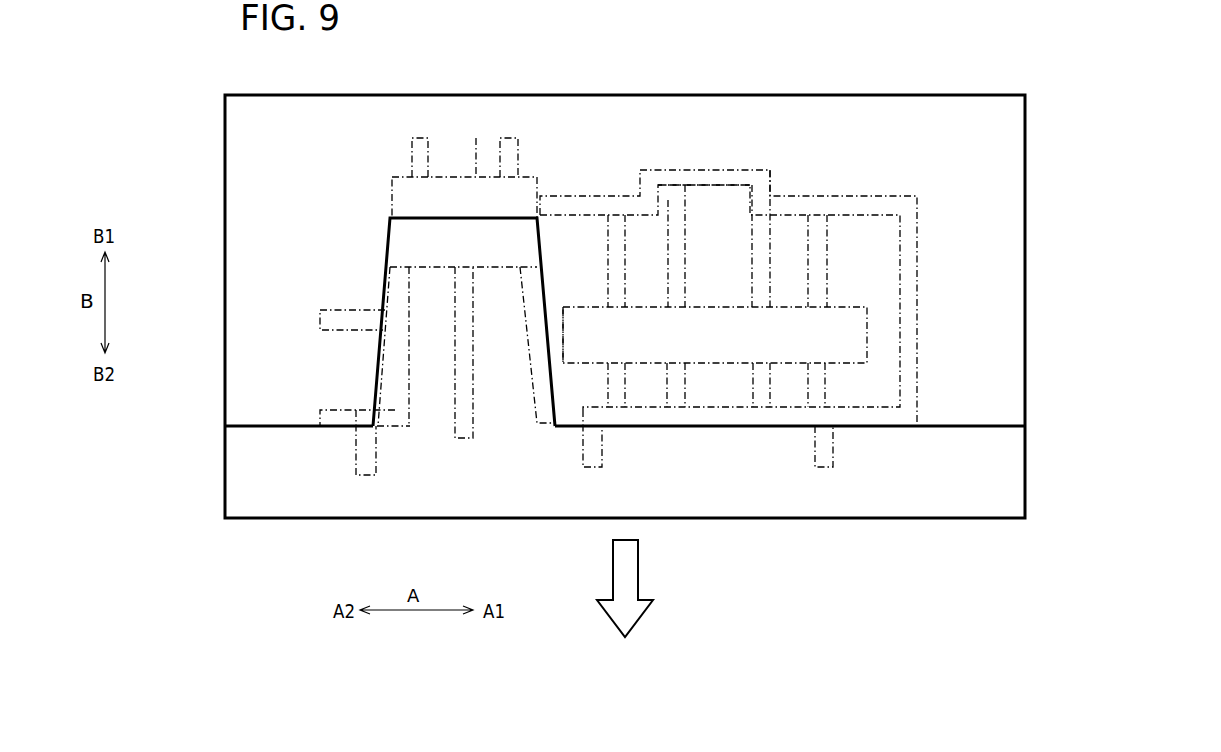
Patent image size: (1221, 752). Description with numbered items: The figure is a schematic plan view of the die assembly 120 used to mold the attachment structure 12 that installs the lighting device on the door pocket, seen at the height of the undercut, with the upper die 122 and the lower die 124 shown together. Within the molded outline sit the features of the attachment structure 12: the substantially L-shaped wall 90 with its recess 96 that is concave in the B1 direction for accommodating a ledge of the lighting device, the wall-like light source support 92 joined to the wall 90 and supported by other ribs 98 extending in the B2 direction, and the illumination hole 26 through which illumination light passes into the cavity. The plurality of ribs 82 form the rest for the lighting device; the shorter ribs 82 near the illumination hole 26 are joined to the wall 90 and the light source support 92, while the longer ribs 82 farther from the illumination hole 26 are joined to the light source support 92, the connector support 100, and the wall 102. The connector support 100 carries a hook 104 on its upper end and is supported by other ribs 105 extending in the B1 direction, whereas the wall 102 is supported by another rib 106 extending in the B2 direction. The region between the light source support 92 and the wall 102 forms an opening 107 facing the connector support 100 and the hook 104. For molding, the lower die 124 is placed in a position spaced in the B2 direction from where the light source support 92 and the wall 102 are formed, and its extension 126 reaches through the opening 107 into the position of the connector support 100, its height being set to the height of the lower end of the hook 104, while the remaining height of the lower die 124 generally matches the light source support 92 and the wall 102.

The attachment structure 12 is at (843, 185).
The illumination hole 26 is at (843, 340).
The ribs 82 is at (473, 438).
The wall 90 is at (912, 272).
The light source support 92 is at (772, 413).
The recess 96 is at (715, 190).
The ribs 98 is at (838, 455).
The connector support 100 is at (478, 135).
The wall 102 is at (350, 410).
The hook 104 is at (423, 245).
The ribs 105 is at (412, 135).
The rib 106 is at (357, 460).
The opening 107 is at (430, 415).
The die assembly 120 is at (1100, 385).
The upper die 122 is at (1012, 399).
The lower die 124 is at (1012, 443).
The extension 126 is at (385, 294).